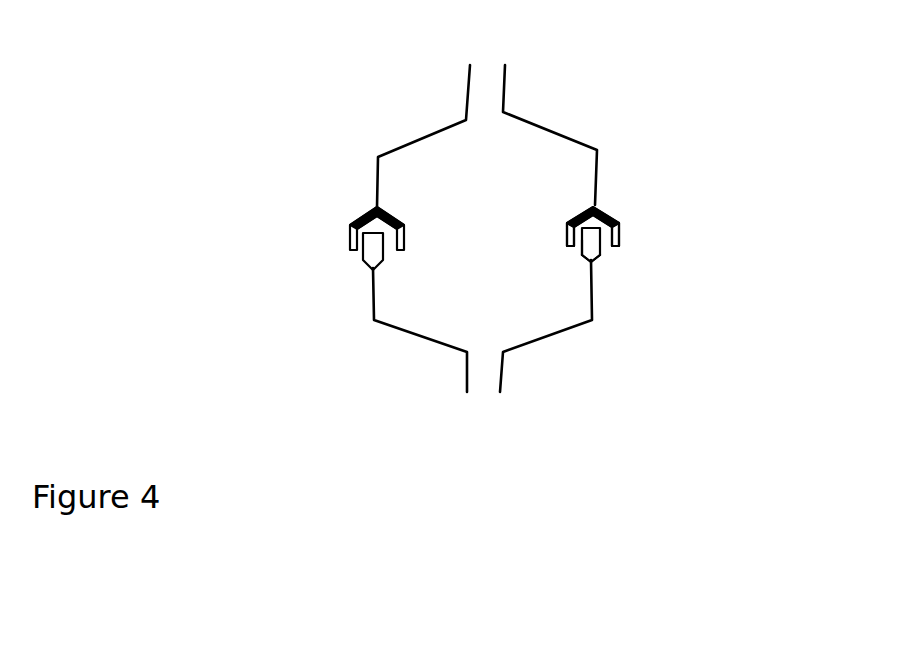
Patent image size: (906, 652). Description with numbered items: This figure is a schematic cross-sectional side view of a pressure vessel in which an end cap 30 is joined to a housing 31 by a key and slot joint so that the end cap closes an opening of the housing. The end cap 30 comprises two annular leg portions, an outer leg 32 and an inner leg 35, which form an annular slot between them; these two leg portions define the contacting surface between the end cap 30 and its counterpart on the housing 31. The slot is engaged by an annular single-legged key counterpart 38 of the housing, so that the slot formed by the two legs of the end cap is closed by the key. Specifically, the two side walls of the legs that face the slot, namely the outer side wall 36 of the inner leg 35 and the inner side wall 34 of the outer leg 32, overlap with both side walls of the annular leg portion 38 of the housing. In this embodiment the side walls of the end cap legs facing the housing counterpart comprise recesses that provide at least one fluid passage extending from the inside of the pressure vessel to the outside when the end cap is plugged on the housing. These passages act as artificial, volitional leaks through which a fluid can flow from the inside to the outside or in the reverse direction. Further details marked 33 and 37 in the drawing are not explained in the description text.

The end cap 30 is at (542, 77).
The housing 31 is at (555, 375).
The outer leg 32 is at (638, 235).
The clip head 33 is at (620, 232).
The inner side wall of the outer leg 34 is at (600, 247).
The inner leg 35 is at (558, 217).
The outer side wall of the inner leg 36 is at (580, 244).
The clip arm 37 is at (563, 233).
The key counterpart 38 is at (602, 257).